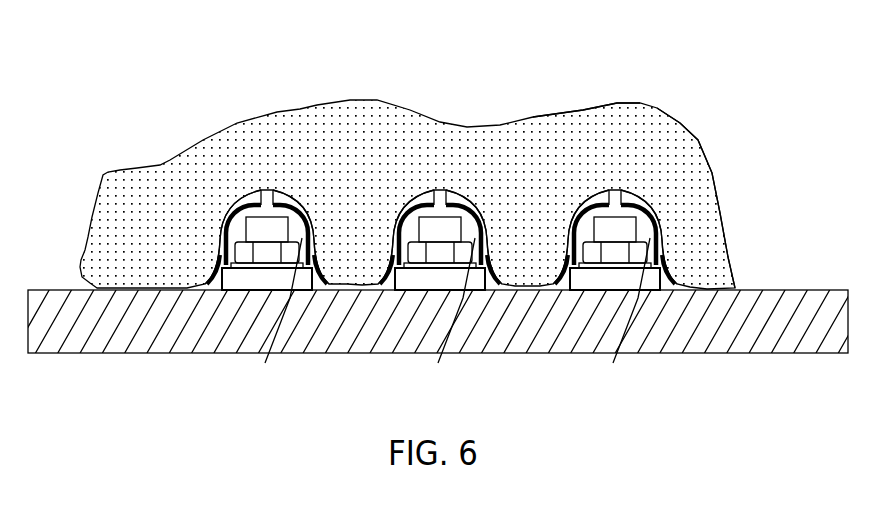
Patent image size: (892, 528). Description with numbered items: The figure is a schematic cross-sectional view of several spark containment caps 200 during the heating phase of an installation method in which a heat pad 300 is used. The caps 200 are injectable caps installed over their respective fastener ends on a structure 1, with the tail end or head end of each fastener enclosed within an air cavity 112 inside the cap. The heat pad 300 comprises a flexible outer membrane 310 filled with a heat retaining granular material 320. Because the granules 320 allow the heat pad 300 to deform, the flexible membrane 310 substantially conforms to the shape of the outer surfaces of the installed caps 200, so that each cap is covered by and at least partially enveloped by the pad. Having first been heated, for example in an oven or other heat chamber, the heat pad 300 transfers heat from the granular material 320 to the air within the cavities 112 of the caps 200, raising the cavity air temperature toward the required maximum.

The base member / vehicle panel 1 is at (778, 289).
The air cavity 112 is at (446, 319).
The cap 200 is at (316, 188).
The heat pad 300 is at (673, 96).
The flexible outer membrane 310 is at (698, 140).
The heat retaining granular material 320 is at (572, 130).